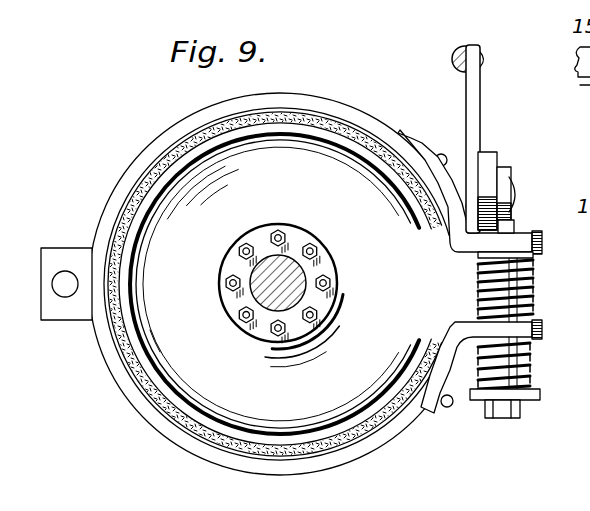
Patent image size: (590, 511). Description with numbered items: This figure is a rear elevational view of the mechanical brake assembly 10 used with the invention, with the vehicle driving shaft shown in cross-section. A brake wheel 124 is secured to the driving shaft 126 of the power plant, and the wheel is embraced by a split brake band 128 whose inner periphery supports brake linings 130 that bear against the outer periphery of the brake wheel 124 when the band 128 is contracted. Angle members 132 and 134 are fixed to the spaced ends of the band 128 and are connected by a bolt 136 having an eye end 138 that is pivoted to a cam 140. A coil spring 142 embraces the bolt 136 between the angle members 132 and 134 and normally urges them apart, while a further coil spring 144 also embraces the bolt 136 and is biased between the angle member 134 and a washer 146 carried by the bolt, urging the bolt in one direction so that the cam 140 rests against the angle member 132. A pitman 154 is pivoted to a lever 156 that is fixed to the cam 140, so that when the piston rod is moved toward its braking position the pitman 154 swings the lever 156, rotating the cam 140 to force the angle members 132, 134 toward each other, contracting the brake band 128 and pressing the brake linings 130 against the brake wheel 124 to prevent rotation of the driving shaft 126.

The brake assembly 10 is at (538, 173).
The brake wheel 124 is at (274, 284).
The driving shaft 126 is at (285, 258).
The split brake band 128 is at (315, 106).
The brake linings 130 is at (247, 127).
The angle member 132 is at (527, 240).
The angle member 134 is at (541, 328).
The bolt 136 is at (530, 288).
The eye end 138 is at (508, 168).
The cam 140 is at (490, 155).
The coil spring 142 is at (530, 262).
The coil spring 144 is at (530, 368).
The washer 146 is at (535, 398).
The pitman 154 is at (452, 55).
The lever 156 is at (473, 103).